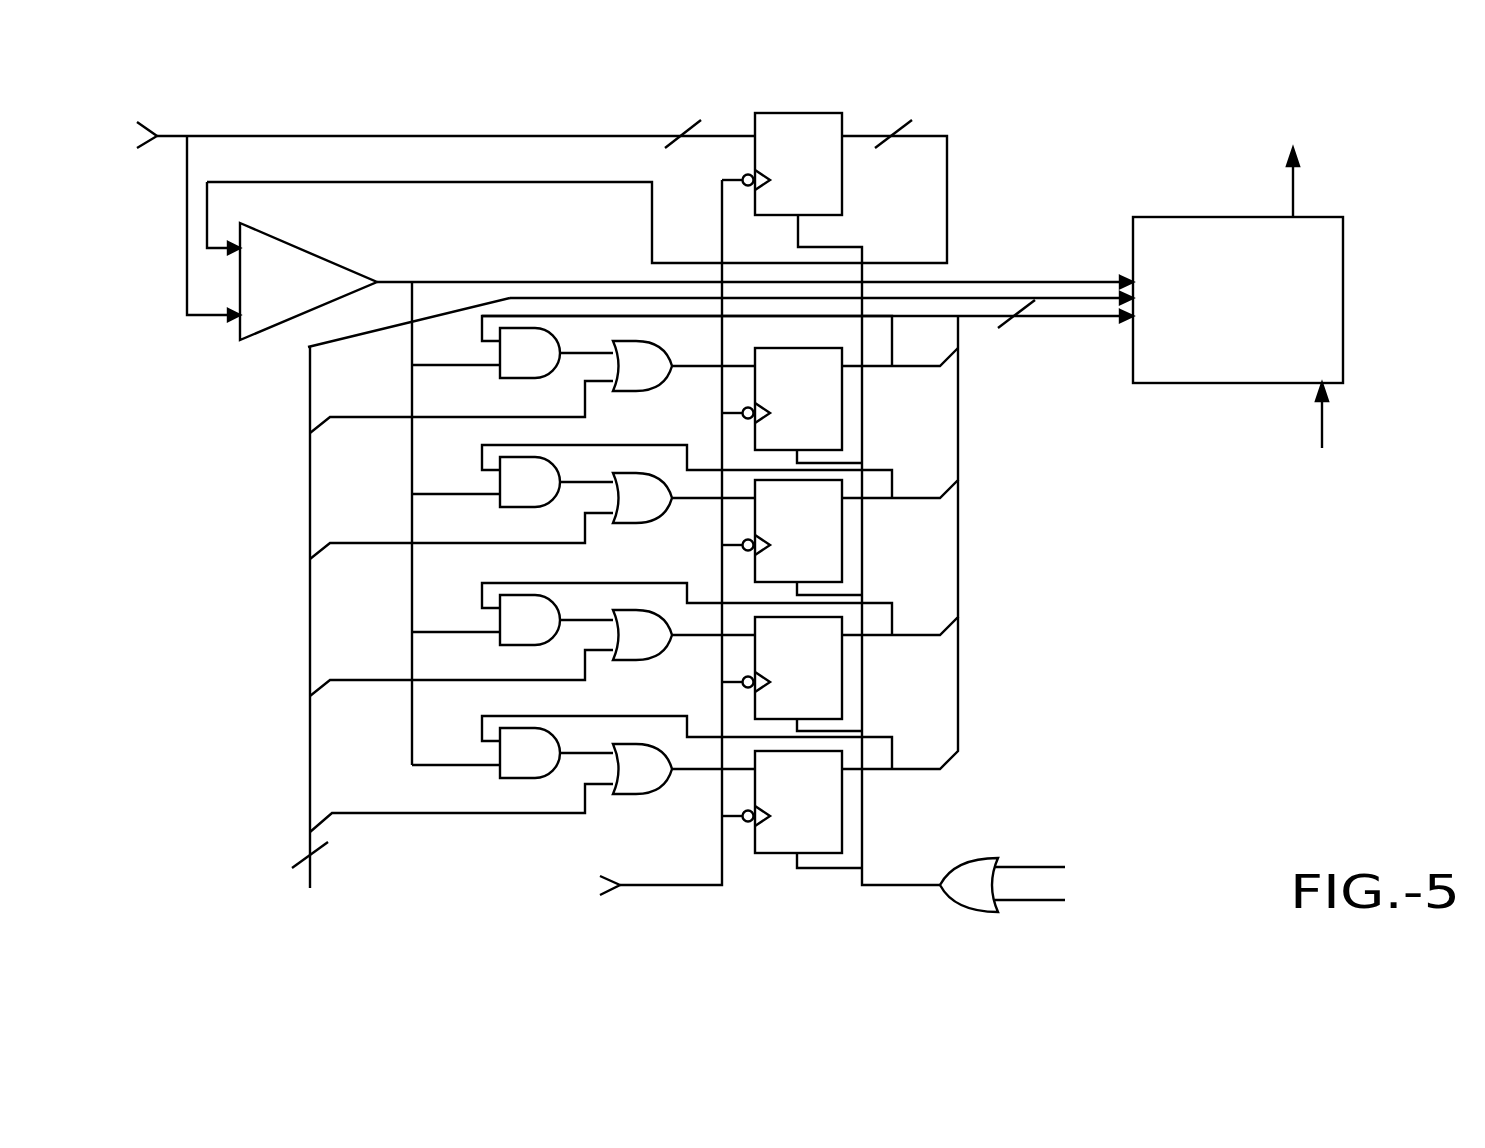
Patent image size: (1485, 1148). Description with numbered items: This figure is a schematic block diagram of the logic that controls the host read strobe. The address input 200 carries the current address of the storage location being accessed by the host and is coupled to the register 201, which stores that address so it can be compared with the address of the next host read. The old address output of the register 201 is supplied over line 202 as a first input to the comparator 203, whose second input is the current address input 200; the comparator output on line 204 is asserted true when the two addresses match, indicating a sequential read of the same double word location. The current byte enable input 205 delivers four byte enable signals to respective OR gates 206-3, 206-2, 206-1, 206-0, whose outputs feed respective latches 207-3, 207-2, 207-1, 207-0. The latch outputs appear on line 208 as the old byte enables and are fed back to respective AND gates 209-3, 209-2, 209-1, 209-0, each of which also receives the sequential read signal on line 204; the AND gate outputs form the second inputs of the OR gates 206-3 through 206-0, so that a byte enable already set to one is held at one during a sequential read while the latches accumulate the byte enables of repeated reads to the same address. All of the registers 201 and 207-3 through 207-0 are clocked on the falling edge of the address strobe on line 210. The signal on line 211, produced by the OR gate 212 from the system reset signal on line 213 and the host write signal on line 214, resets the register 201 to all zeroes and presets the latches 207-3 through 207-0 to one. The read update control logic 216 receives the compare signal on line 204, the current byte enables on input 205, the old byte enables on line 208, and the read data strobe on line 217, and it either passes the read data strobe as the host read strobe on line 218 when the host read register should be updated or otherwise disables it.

The address input 200 is at (160, 136).
The register 201 is at (828, 113).
The line 202 is at (563, 182).
The comparator 203 is at (273, 237).
The line 204 is at (395, 282).
The current byte enable input 205 is at (310, 838).
The OR gate 206-0 is at (634, 789).
The OR gate 206-1 is at (634, 655).
The OR gate 206-2 is at (634, 518).
The OR gate 206-3 is at (634, 386).
The latch 207-0 is at (813, 808).
The latch 207-1 is at (813, 674).
The latch 207-2 is at (813, 537).
The latch 207-3 is at (813, 405).
The line 208 is at (990, 317).
The AND gate 209-0 is at (527, 778).
The AND gate 209-1 is at (527, 645).
The AND gate 209-2 is at (527, 507).
The AND gate 209-3 is at (527, 378).
The line 210 is at (645, 888).
The line 211 is at (867, 223).
The OR gate 212 is at (973, 858).
The line 213 is at (1040, 900).
The line 214 is at (1050, 867).
The read update control logic 216 is at (1167, 217).
The line 217 is at (1325, 415).
The line 218 is at (1297, 195).